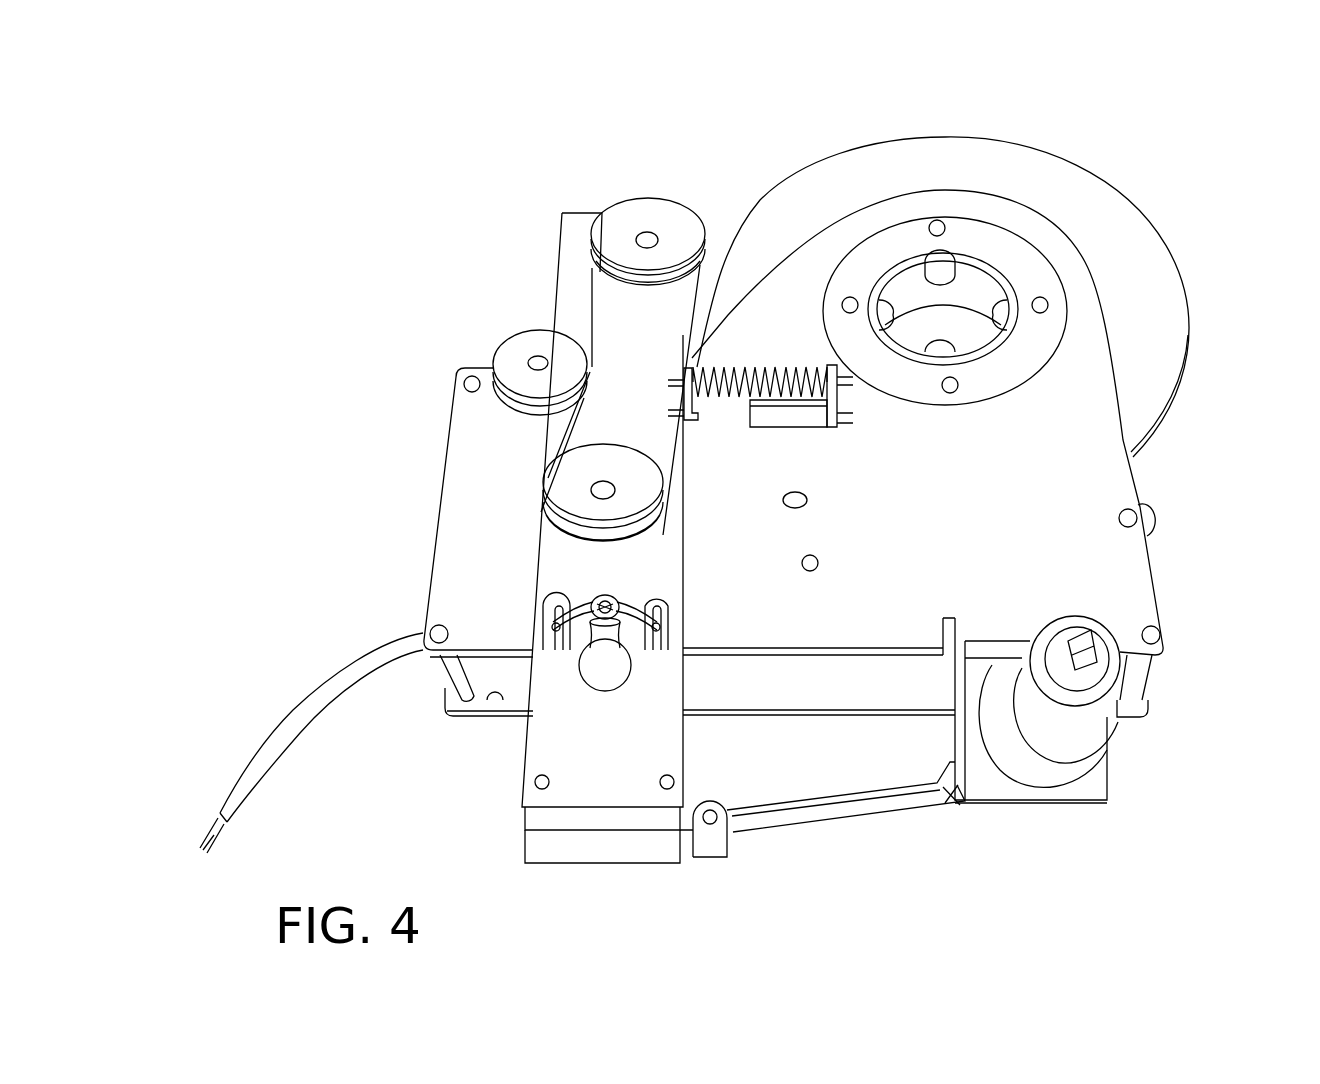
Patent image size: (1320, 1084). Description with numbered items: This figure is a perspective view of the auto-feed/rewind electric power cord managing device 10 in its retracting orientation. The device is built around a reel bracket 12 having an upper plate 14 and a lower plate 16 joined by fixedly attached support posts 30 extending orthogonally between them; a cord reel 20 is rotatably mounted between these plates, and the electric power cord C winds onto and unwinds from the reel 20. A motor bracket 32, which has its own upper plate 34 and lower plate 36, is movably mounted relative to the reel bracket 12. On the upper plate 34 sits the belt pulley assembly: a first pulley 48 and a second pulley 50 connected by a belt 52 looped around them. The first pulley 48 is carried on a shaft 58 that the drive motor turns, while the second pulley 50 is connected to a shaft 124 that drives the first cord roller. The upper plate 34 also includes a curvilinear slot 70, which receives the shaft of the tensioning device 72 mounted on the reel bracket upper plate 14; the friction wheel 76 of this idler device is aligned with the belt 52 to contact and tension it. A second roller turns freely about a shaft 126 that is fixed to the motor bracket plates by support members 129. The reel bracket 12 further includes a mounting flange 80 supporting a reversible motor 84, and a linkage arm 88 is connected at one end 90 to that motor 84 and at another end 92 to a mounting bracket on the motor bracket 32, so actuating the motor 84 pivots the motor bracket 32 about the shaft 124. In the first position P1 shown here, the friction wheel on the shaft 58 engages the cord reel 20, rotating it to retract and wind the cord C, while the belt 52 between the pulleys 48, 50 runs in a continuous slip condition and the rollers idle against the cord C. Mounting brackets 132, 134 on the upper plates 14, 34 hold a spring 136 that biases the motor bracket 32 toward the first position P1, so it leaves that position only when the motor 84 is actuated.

The electric power cord managing device 10 is at (1148, 144).
The reel bracket 12 is at (465, 622).
The upper plate 14 is at (764, 607).
The lower plate 16 is at (496, 690).
The cord reel 20 is at (1038, 148).
The support posts 30 is at (440, 676).
The motor bracket 32 is at (578, 206).
The upper plate 34 is at (619, 756).
The lower plate 36 is at (624, 866).
The first pulley 48 is at (672, 218).
The second pulley 50 is at (575, 515).
The belt 52 is at (590, 296).
The shaft 58 is at (647, 231).
The curvilinear slot 70 is at (591, 375).
The tensioning device 72 is at (503, 336).
The friction wheel 76 is at (507, 400).
The mounting flange 80 is at (1092, 808).
The motor 84 is at (1060, 722).
The arm 88 is at (835, 825).
The end 90 is at (950, 800).
The end 92 is at (738, 818).
The shaft 124 is at (601, 488).
The shaft 126 is at (608, 602).
The support members 129 is at (570, 618).
The mounting bracket 132 is at (843, 388).
The mounting bracket 134 is at (693, 405).
The spring 136 is at (792, 367).
The first position P1 is at (620, 170).
The electric power cord C is at (298, 712).